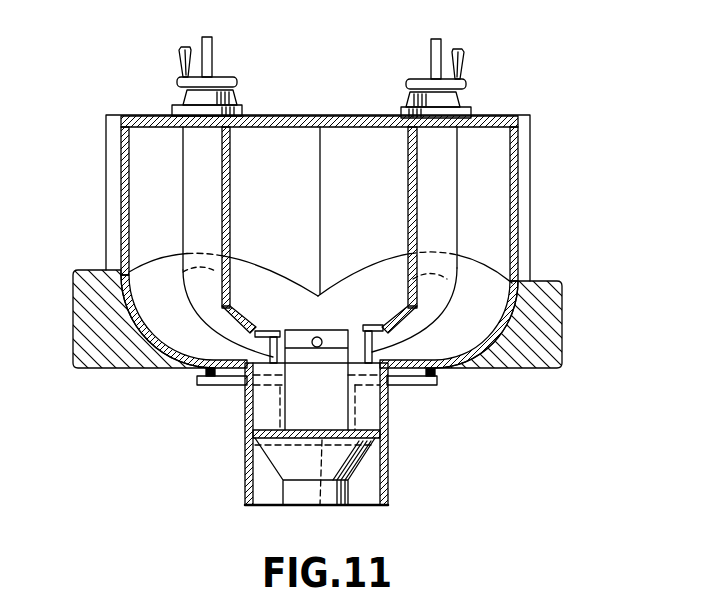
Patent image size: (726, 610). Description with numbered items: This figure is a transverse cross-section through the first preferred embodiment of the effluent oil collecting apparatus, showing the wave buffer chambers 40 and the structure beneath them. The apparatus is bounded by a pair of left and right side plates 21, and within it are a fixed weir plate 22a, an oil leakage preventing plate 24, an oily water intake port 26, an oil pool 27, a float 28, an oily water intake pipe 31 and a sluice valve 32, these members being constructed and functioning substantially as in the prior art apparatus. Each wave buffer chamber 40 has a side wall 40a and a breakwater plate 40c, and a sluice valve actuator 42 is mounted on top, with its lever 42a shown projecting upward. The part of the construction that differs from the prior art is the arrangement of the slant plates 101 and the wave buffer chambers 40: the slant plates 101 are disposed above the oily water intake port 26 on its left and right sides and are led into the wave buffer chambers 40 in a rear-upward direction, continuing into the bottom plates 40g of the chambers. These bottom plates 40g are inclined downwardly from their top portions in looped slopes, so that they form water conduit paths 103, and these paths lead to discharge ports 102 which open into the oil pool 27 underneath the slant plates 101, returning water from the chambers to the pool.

The side plates 21 is at (245, 465).
The fixed weir plate 22a is at (370, 450).
The oil leakage preventing plate 24 is at (340, 408).
The oily water intake port 26 is at (295, 337).
The oil pool 27 is at (327, 407).
The float 28 is at (550, 323).
The oily water intake pipe 31 is at (319, 337).
The sluice valve 32 is at (372, 422).
The wave buffer chambers 40 is at (522, 112).
The side wall of the wave buffer chamber 40a is at (112, 182).
The breakwater plate 40c is at (380, 192).
The bottom plates of the wave buffer chambers 40g is at (478, 272).
The sluice valve actuator 42 is at (213, 53).
The lever 42a is at (180, 55).
The slant plates 101 is at (358, 297).
The discharge ports 102 is at (244, 318).
The water conduit paths 103 is at (170, 333).